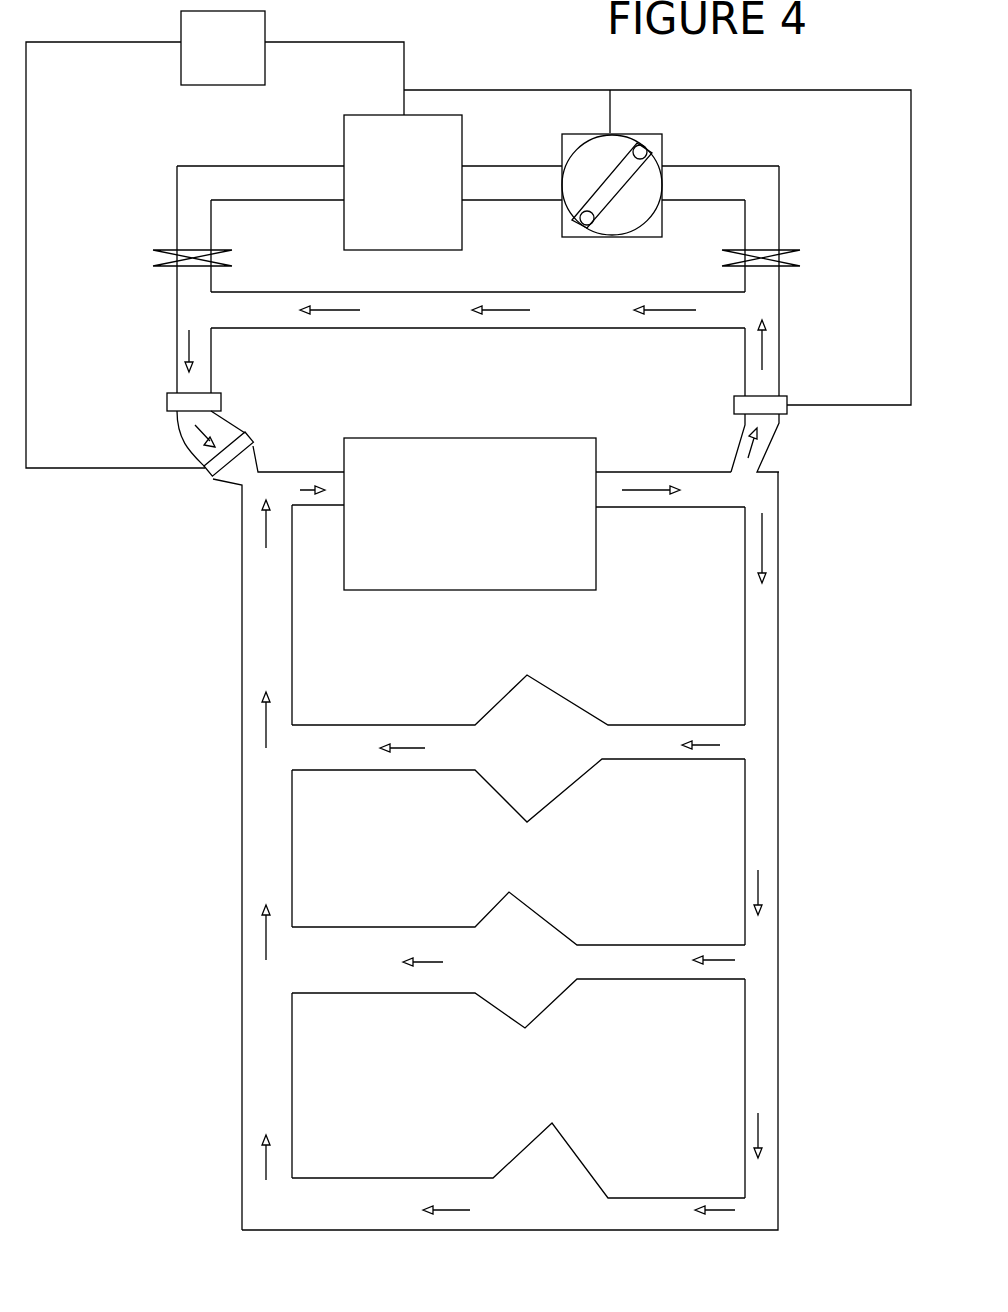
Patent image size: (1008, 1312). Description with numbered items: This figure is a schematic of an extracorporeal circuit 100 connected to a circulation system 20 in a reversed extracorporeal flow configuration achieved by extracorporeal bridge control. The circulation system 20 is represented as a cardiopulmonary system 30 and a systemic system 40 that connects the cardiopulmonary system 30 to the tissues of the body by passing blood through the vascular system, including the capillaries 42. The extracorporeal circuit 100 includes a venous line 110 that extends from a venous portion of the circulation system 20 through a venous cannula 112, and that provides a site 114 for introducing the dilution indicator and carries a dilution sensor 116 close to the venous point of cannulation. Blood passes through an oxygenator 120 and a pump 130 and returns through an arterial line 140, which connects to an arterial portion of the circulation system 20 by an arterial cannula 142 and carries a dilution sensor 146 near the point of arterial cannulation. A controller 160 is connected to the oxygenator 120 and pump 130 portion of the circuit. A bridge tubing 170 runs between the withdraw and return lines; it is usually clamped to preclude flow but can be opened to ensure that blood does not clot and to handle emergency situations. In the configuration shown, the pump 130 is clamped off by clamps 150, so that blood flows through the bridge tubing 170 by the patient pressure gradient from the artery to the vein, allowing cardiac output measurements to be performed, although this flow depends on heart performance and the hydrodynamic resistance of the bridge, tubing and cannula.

The circulation system 20 is at (228, 712).
The cardiopulmonary system 30 is at (455, 523).
The systemic system 40 is at (778, 845).
The capillaries 42 is at (502, 761).
The extracorporeal circuit 100 is at (782, 212).
The venous line 110 is at (177, 305).
The venous cannula 112 is at (240, 485).
The site for introduction of the dilution indicator 114 is at (170, 395).
The dilution sensor 116 is at (205, 465).
The oxygenator 120 is at (381, 193).
The pump 130 is at (602, 238).
The arterial line 140 is at (780, 297).
The arterial cannula 142 is at (762, 470).
The dilution sensor 146 is at (787, 400).
The clamps 150 is at (165, 249).
The controller 160 is at (201, 48).
The bridge tubing 170 is at (402, 326).